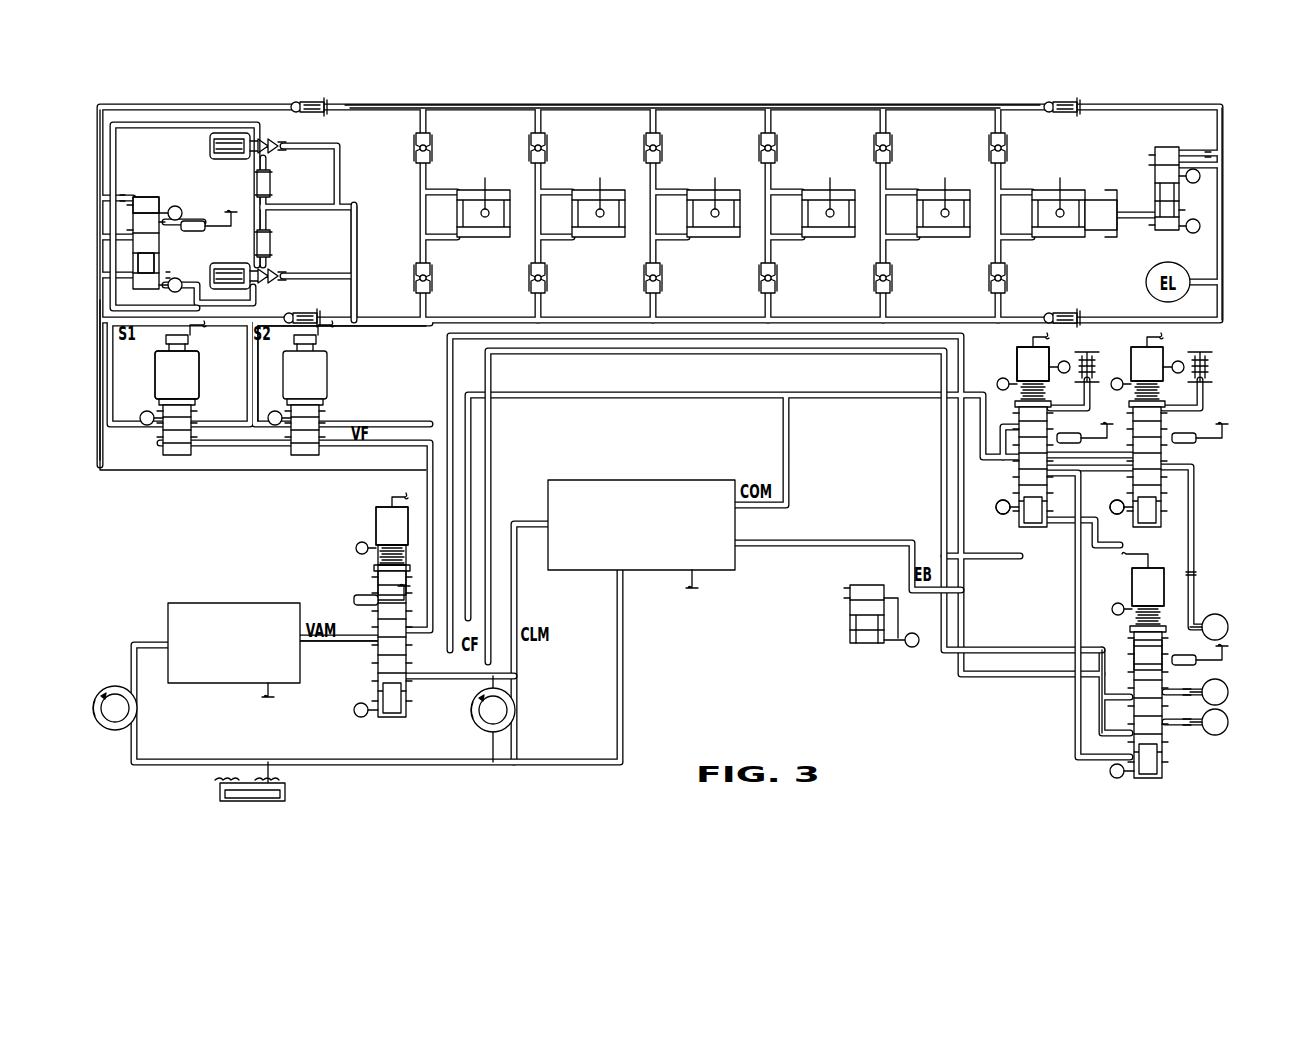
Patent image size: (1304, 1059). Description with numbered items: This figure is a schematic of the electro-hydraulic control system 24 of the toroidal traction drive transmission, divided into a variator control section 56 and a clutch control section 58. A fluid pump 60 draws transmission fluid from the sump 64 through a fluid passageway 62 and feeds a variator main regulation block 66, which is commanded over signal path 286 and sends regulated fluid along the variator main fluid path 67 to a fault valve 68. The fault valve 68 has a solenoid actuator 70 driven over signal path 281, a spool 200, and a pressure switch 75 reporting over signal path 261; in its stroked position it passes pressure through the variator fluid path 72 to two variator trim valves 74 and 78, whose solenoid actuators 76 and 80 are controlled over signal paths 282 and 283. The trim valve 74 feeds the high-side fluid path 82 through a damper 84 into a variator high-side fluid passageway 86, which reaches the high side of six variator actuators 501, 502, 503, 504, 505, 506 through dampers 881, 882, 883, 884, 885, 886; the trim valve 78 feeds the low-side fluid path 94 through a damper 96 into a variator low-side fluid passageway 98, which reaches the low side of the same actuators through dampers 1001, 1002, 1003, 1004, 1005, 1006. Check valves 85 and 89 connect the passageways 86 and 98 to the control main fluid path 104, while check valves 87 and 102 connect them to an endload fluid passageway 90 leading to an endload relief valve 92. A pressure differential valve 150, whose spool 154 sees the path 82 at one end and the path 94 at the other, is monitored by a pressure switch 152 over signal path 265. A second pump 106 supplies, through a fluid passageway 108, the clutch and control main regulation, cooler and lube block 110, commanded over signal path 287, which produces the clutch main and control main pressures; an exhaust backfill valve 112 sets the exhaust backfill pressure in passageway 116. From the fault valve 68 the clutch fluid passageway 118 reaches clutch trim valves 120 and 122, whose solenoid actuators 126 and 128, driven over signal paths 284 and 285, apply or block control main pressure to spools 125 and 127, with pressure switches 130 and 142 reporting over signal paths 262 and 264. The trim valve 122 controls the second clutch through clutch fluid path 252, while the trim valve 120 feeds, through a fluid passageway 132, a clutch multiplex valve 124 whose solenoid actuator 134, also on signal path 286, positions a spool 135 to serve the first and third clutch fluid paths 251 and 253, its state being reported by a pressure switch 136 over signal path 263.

The electro-hydraulic control system 24 is at (165, 539).
The C1 clutch fluid path 251 is at (1217, 735).
The C2 clutch fluid path 252 is at (1216, 614).
The C3 fluid path 253 is at (1228, 690).
The signal path 261 is at (338, 588).
The signal path 262 is at (1085, 422).
The signal path 263 is at (1217, 653).
The signal path 264 is at (1213, 418).
The signal path 265 is at (216, 232).
The output signal path 281 is at (366, 506).
The signal path 282 is at (207, 341).
The signal path 283 is at (335, 341).
The signal path 284 is at (1021, 340).
The signal path 285 is at (1186, 340).
The output signal path 286 is at (266, 694).
The output signal path 287 is at (702, 590).
The variator actuator 501 is at (491, 188).
The variator actuator 502 is at (606, 188).
The variator actuator 503 is at (721, 188).
The variator actuator 504 is at (836, 188).
The variator actuator 505 is at (951, 188).
The variator actuator 506 is at (1068, 188).
The variator control section 56 is at (725, 124).
The clutch control section 58 is at (1204, 507).
The fluid pump 60 is at (110, 734).
The fluid passageway 62 is at (173, 762).
The sump 64 is at (287, 791).
The variator main regulation block 66 is at (217, 602).
The variator main fluid path 67 is at (344, 644).
The fault valve 68 is at (313, 550).
The electronic actuator 70 is at (375, 522).
The variator fluid path 72 is at (426, 443).
The variator trim valve 74 is at (204, 372).
The pressure switch 75 is at (372, 600).
The actuator 76 is at (155, 391).
The variator trim valve 78 is at (368, 394).
The actuator 80 is at (318, 370).
The fluid path 82 is at (118, 156).
The damper 84 is at (285, 168).
The check valve 85 is at (314, 102).
The variator high-side fluid passageway 86 is at (464, 104).
The check valve 87 is at (1068, 102).
The damper 881 is at (410, 150).
The damper 882 is at (544, 150).
The damper 883 is at (659, 150).
The damper 884 is at (774, 150).
The damper 885 is at (889, 150).
The damper 886 is at (1004, 150).
The check valve 89 is at (306, 314).
The endload fluid passageway 90 is at (1152, 104).
The endload relief valve 92 is at (1145, 240).
The fluid path 94 is at (280, 389).
The damper 96 is at (282, 266).
The variator low-side fluid passageway 98 is at (357, 254).
The damper 1001 is at (433, 276).
The damper 1002 is at (548, 276).
The damper 1003 is at (663, 276).
The damper 1004 is at (778, 276).
The damper 1005 is at (893, 276).
The damper 1006 is at (1008, 276).
The check valve 102 is at (1067, 312).
The control main fluid path 104 is at (120, 472).
The fluid pump 106 is at (475, 717).
The fluid passageway 108 is at (518, 682).
The clutch and control main regulation, cooler and lube block 110 is at (604, 480).
The engine braking valve 112 is at (828, 617).
The exhaust backfill fluid passageway 116 is at (827, 541).
The clutch fluid passageway 118 is at (492, 463).
The clutch trim valve 120 is at (1003, 354).
The clutch trim valve 122 is at (1226, 366).
The clutch multiplex valve 124 is at (1046, 732).
The spool 125 is at (1005, 512).
The electronic actuator 126 is at (1017, 367).
The spool 127 is at (1120, 512).
The electronic actuator 128 is at (1130, 360).
The pressure switch 130 is at (1030, 421).
The fluid passageway 132 is at (1075, 591).
The electronic actuator 134 is at (1132, 590).
The spool 135 is at (1133, 640).
The pressure switch 136 is at (1164, 655).
The pressure switch 142 is at (1182, 429).
The pressure differential valve 150 is at (186, 212).
The pressure switch 152 is at (191, 225).
The spool 154 is at (163, 204).
The spool 200 is at (408, 691).